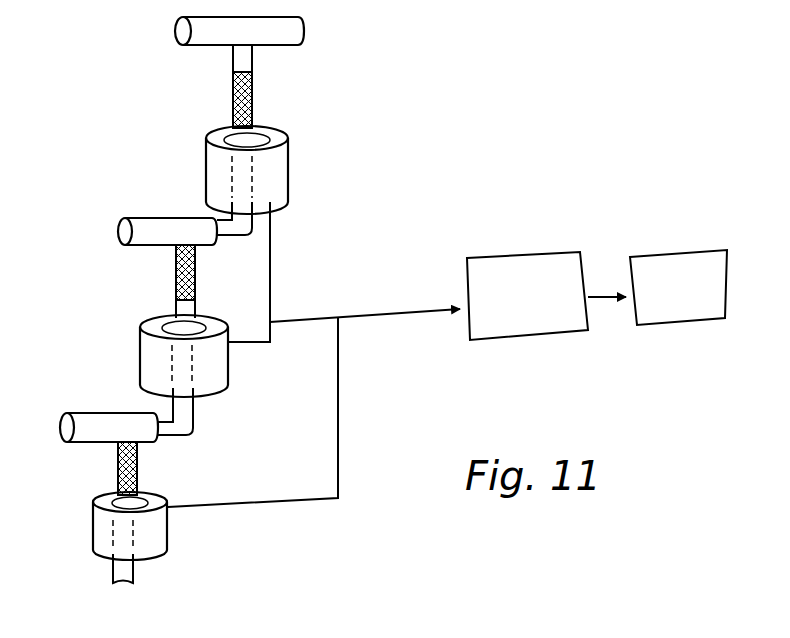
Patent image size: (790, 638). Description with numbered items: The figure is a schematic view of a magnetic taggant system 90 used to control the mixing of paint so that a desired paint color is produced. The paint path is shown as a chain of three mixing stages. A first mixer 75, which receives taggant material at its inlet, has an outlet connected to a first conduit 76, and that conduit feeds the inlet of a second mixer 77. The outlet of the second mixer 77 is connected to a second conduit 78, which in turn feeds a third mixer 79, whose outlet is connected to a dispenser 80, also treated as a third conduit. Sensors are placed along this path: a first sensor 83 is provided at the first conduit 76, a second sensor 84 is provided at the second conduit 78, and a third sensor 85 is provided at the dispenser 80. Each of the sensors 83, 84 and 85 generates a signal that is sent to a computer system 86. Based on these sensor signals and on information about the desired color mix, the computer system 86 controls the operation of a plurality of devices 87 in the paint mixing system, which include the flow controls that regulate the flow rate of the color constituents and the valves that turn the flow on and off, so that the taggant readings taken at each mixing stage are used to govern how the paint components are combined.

The first mixer 75 is at (286, 33).
The first conduit 76 is at (252, 62).
The second mixer 77 is at (155, 215).
The second conduit 78 is at (178, 312).
The third mixer 79 is at (92, 413).
The dispenser 80 is at (117, 467).
The first sensor 83 is at (276, 190).
The second sensor 84 is at (216, 375).
The third sensor 85 is at (168, 550).
The computer system 86 is at (520, 258).
The plurality of devices 87 is at (683, 252).
The magnetic taggant system 90 is at (476, 154).